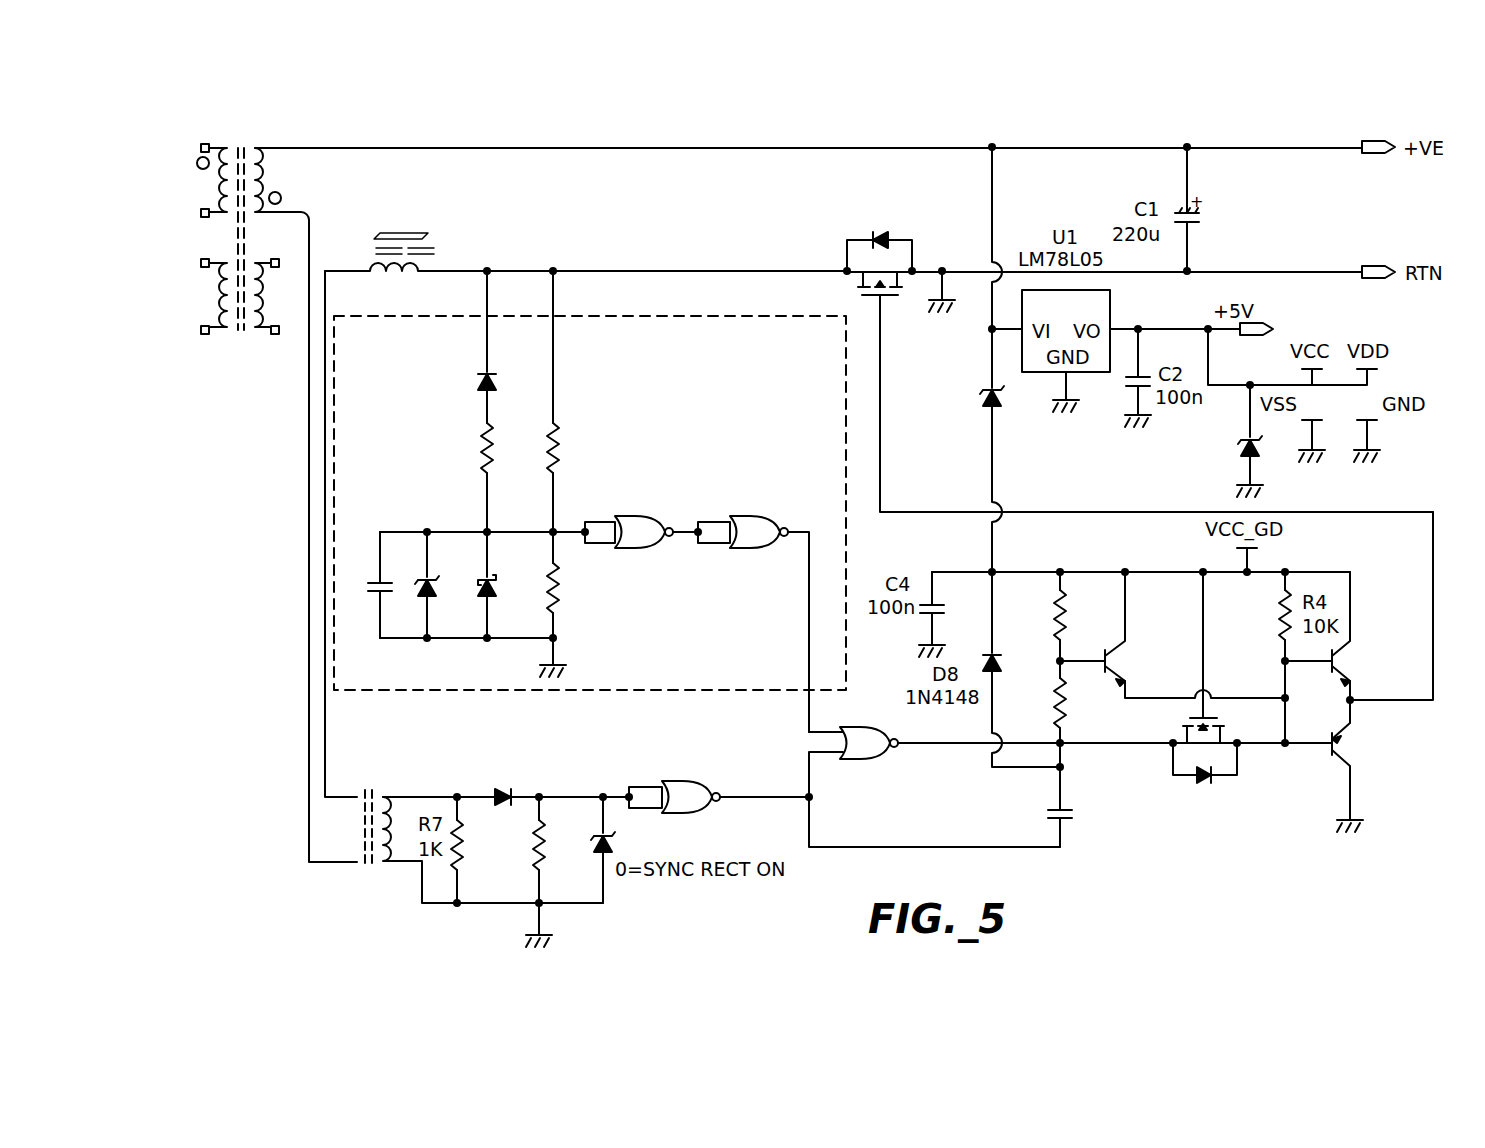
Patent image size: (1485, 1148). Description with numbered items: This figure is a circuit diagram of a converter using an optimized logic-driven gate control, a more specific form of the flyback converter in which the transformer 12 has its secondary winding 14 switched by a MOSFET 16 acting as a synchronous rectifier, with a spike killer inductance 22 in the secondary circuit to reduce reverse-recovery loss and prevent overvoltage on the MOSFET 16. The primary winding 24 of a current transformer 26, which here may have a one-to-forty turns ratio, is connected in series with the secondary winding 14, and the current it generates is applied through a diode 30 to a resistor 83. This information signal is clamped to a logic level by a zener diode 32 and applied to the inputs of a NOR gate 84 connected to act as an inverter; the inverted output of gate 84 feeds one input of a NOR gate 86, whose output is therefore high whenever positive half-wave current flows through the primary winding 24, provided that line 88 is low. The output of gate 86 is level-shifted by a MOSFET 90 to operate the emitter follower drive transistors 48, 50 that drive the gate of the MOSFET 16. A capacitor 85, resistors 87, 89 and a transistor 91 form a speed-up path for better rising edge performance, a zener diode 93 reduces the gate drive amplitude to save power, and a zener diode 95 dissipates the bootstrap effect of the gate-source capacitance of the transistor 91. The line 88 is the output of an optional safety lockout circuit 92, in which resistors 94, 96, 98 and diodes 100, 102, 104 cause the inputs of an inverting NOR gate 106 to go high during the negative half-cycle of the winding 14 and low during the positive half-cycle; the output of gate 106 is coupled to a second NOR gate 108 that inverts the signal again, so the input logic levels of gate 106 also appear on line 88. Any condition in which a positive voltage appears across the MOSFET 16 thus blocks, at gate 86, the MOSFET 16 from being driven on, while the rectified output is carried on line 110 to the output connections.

The transformer 12 is at (234, 141).
The secondary winding 14 is at (262, 190).
The MOSFET 16 is at (905, 262).
The spike killer inductance 22 is at (434, 254).
The primary winding 24 is at (357, 828).
The current transformer 26 is at (371, 765).
The diode 30 is at (505, 788).
The zener diode 32 is at (601, 852).
The emitter follower drive transistor 48 is at (1349, 654).
The emitter follower drive transistor 50 is at (1352, 760).
The resistor 83 is at (545, 836).
The NOR gate 84 is at (705, 790).
The capacitor 85 is at (1050, 812).
The NOR gate 86 is at (905, 752).
The resistor 87 is at (1065, 698).
The line 88 is at (812, 636).
The resistor 89 is at (1068, 608).
The MOSFET 90 is at (1173, 758).
The transistor 91 is at (1115, 655).
The safety lockout circuit 92 is at (692, 368).
The zener diode 93 is at (984, 394).
The resistor 94 is at (480, 467).
The zener diode 95 is at (1236, 440).
The resistor 96 is at (546, 467).
The resistor 98 is at (558, 602).
The diode 100 is at (484, 371).
The diode 102 is at (432, 576).
The diode 104 is at (532, 614).
The inverting NOR gate 106 is at (652, 528).
The second NOR gate 108 is at (768, 528).
The rectified output line 110 is at (608, 271).